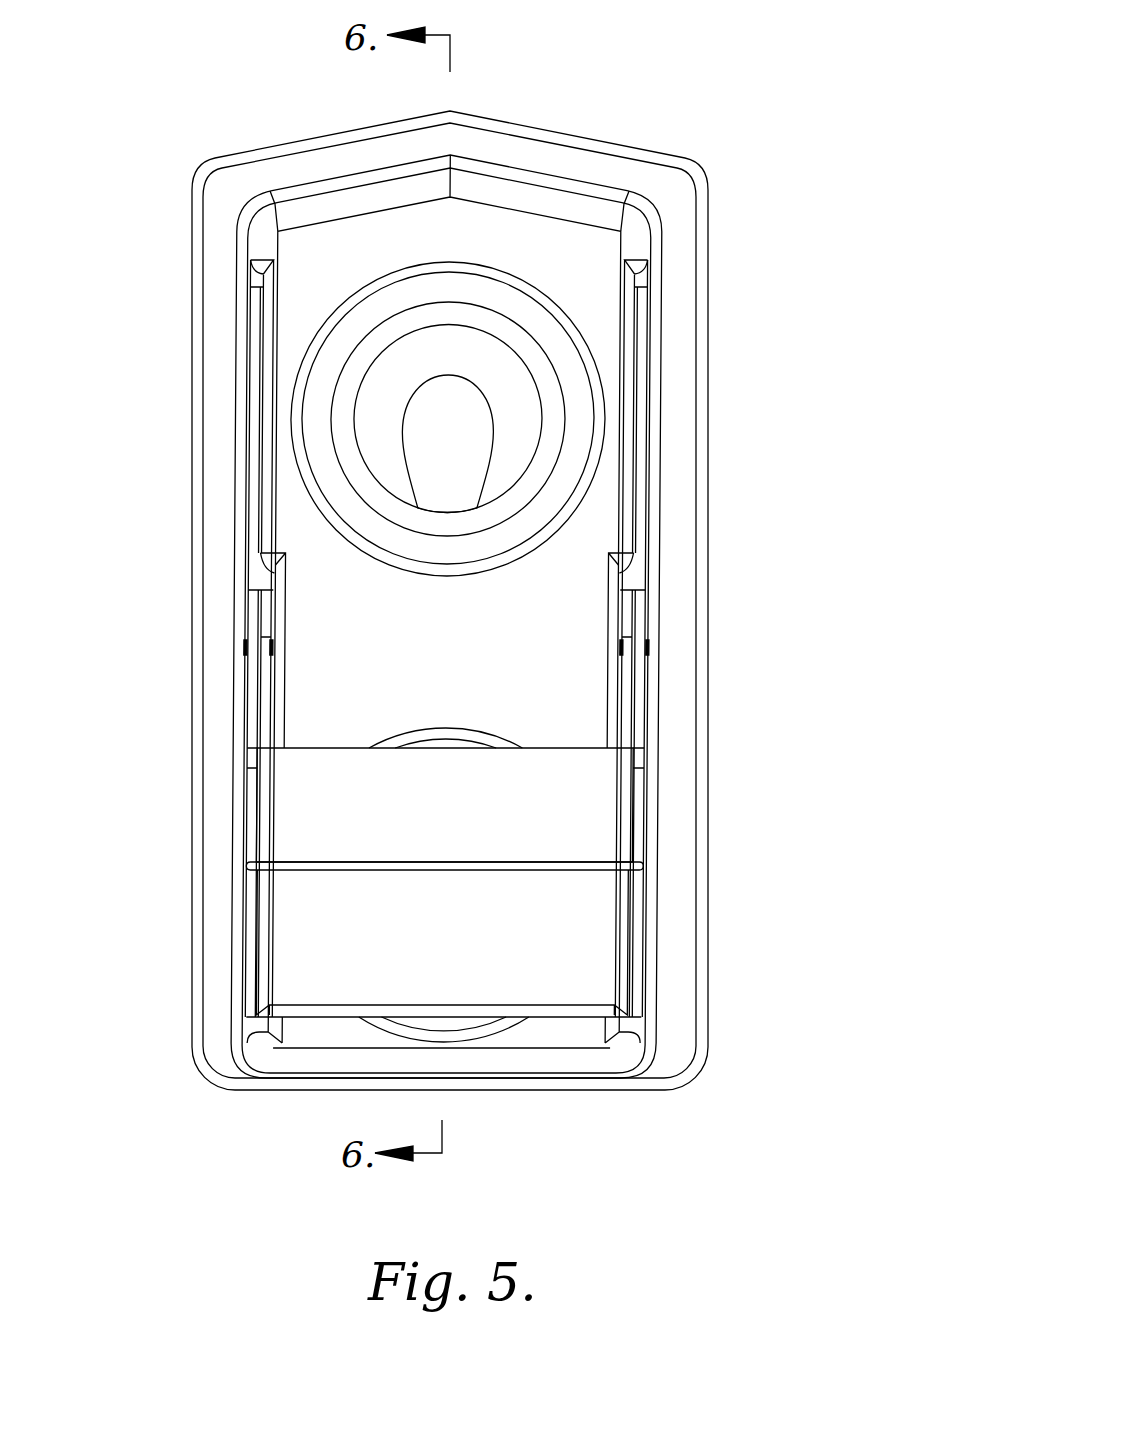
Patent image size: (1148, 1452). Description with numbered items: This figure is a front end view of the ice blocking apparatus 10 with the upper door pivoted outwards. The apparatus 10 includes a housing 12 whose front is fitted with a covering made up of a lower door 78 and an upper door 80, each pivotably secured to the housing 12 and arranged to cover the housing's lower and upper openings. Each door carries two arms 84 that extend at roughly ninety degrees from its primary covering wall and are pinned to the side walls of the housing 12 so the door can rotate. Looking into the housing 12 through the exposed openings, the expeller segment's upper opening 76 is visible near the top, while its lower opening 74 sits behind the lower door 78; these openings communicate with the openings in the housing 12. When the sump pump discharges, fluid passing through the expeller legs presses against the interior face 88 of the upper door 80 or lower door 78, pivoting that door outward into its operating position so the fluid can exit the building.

The ice blocking apparatus 10 is at (612, 57).
The housing 12 is at (626, 148).
The lower opening 74 is at (485, 742).
The upper opening 76 is at (513, 283).
The lower door 78 is at (612, 946).
The upper door 80 is at (624, 808).
The arms 84 is at (646, 342).
The interior face 88 is at (340, 772).